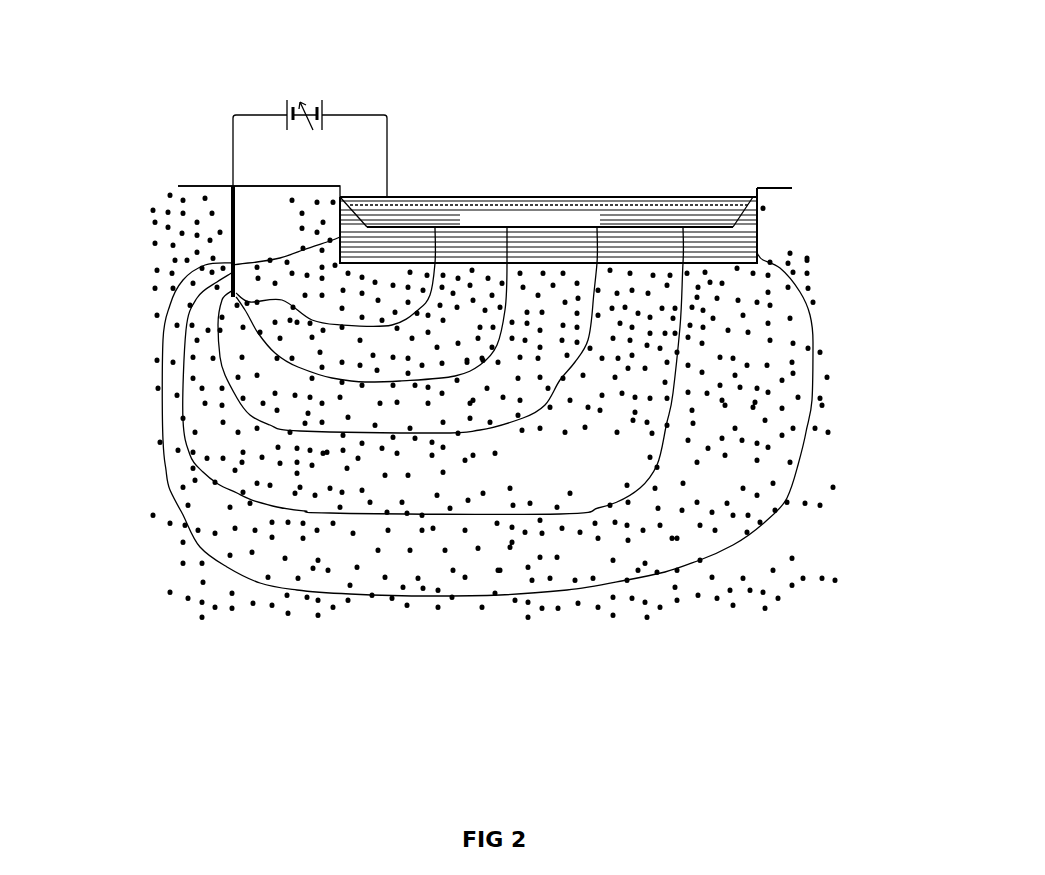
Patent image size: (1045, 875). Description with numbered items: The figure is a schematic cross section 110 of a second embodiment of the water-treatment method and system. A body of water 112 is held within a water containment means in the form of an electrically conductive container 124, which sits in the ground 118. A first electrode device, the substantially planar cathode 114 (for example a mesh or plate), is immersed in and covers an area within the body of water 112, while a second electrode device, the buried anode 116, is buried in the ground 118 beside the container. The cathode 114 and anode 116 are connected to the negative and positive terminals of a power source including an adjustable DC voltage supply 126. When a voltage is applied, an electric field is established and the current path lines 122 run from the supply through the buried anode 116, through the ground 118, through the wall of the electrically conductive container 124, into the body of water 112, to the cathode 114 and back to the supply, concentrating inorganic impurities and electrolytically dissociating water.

The cathodic protection system 110 is at (528, 140).
The body of water 112 is at (693, 197).
The substantially planar cathode 114 is at (634, 218).
The buried anode 116 is at (231, 198).
The ground 118 is at (178, 218).
The current path lines 122 is at (245, 325).
The electrically conductive container 124 is at (765, 200).
The DC supply 126 is at (285, 67).